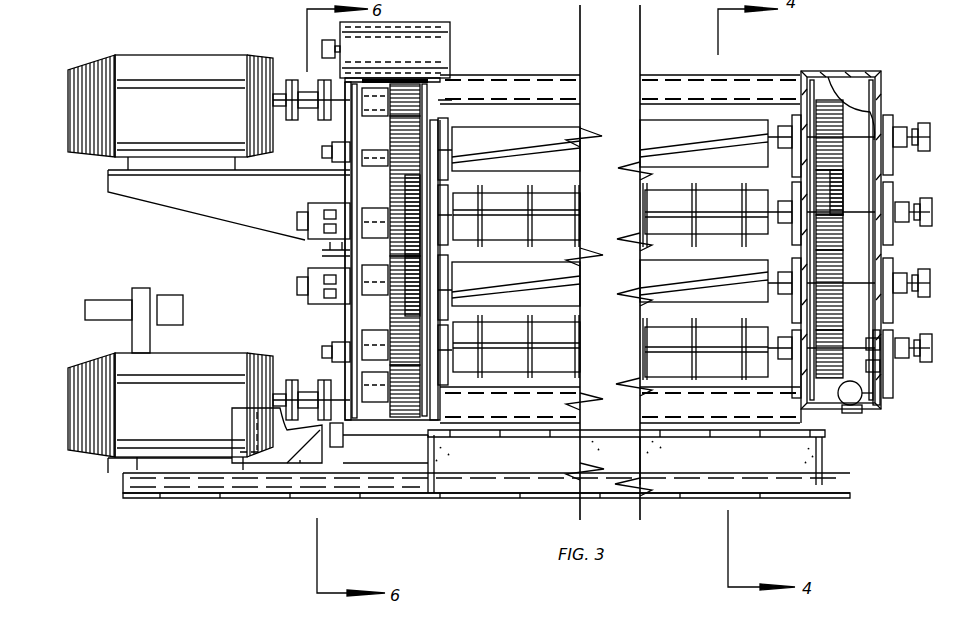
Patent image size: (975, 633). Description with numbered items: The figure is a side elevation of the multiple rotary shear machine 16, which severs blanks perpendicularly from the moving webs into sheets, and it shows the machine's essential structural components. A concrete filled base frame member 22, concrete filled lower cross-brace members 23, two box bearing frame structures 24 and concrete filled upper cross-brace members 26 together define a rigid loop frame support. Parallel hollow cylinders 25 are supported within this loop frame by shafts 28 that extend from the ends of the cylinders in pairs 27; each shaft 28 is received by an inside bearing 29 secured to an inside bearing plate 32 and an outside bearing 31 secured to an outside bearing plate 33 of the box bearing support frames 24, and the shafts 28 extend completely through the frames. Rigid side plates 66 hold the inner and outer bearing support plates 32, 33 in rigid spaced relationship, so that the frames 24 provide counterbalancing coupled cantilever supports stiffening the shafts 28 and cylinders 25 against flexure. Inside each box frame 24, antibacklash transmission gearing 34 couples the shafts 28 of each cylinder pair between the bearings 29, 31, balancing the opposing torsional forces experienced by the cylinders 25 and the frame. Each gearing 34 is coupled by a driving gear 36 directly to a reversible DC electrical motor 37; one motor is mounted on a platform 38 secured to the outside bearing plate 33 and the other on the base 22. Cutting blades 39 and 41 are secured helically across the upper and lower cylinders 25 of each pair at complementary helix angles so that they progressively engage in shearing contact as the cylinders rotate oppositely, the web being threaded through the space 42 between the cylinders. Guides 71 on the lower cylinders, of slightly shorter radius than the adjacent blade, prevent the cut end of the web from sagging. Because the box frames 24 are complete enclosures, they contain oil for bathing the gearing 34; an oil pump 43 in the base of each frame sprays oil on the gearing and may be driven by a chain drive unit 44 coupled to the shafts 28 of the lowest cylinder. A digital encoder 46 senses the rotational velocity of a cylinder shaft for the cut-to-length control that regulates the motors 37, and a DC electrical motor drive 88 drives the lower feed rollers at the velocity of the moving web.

The multiple rotary shear machine 16 is at (663, 62).
The base frame member 22 is at (812, 470).
The lower cross-brace members 23 is at (620, 405).
The box bearing frame structures 24 is at (432, 61).
The hollow cylinders 25 is at (716, 234).
The upper cross-brace members 26 is at (620, 89).
The pairs of cylinders 27 is at (912, 198).
The shafts 28 is at (370, 216).
The inside bearing 29 is at (452, 180).
The outside bearing 31 is at (345, 140).
The inside bearing plate 32 is at (430, 97).
The outside bearing plate 33 is at (350, 186).
The antibacklash transmission gearing 34 is at (846, 150).
The driving gear 36 is at (392, 116).
The reversible DC electrical motor 37 is at (170, 112).
The platform 38 is at (158, 195).
The cutting blade 39 is at (498, 155).
The cutting blade 41 is at (478, 206).
The space 42 is at (500, 184).
The oil pump 43 is at (860, 412).
The chain drive unit 44 is at (880, 390).
The digital encoder 46 is at (312, 217).
The rigid side plates 66 is at (872, 98).
The guide 71 is at (529, 194).
The DC electrical motor drive 88 is at (458, 20).